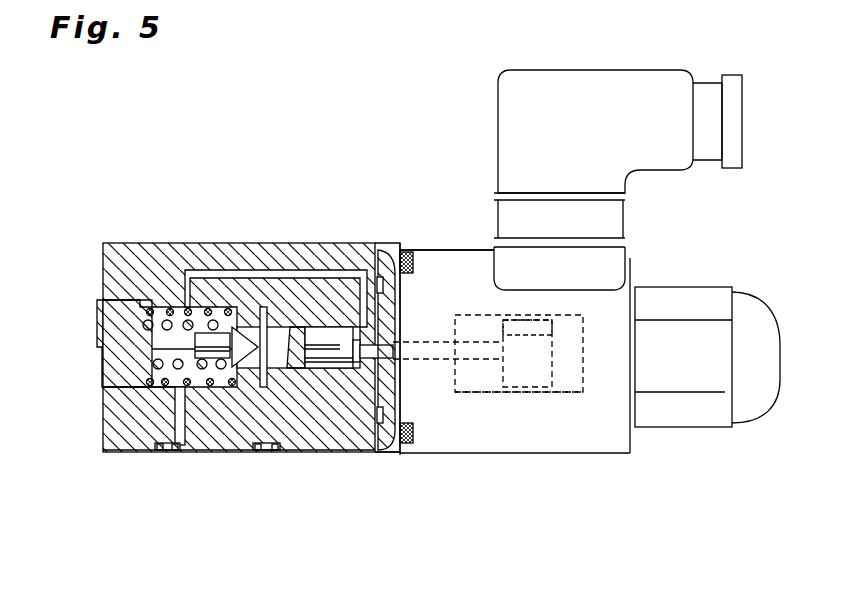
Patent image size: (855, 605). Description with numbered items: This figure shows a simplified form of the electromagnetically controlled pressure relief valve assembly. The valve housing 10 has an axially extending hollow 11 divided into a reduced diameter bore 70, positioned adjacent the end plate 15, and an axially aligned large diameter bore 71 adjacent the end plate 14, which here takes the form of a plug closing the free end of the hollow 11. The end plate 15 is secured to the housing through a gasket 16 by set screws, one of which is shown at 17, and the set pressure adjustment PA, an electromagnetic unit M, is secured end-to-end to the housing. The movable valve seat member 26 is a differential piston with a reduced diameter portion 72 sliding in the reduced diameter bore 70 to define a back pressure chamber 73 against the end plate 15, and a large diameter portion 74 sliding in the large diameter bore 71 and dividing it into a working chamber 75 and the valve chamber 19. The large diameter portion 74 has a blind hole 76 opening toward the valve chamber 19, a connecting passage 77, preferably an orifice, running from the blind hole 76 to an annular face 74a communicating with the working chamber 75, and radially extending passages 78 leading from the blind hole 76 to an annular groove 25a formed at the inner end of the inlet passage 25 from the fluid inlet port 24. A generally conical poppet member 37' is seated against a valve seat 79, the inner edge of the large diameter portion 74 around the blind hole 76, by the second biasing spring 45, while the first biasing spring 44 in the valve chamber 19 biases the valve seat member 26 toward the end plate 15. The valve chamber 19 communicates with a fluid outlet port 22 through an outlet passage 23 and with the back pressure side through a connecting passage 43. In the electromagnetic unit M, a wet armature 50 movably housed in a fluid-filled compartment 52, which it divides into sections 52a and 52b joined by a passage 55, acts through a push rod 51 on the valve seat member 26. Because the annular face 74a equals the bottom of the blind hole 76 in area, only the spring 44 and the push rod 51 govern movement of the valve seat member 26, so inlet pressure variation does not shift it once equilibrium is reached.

The valve housing 10 is at (102, 242).
The axially extending hollow 11 is at (165, 412).
The flanged end plate 14 is at (113, 330).
The flanged end plate 15 is at (410, 453).
The gasket 16 is at (393, 243).
The set screw 17 is at (443, 453).
The valve chamber 19 is at (150, 303).
The fluid outlet port 22 is at (145, 452).
The outlet passage 23 is at (168, 422).
The fluid inlet port 24 is at (277, 453).
The inlet passage 25 is at (262, 453).
The annular groove 25a is at (262, 335).
The movable valve seat member 26 is at (307, 453).
The poppet member 37' is at (137, 363).
The connecting passage 43 is at (303, 318).
The first biasing spring 44 is at (168, 322).
The second biasing spring 45 is at (190, 318).
The wet armature 50 is at (542, 378).
The push rod 51 is at (420, 290).
The compartment 52 is at (585, 330).
The compartment section 52a is at (488, 380).
The compartment section 52b is at (570, 373).
The passage 55 is at (545, 325).
The reduced diameter bore 70 is at (388, 453).
The large diameter bore 71 is at (183, 453).
The reduced diameter portion 72 is at (372, 453).
The back pressure chamber 73 is at (392, 358).
The large diameter portion 74 is at (222, 325).
The annular face 74a is at (330, 453).
The working chamber 75 is at (372, 340).
The blind hole 76 is at (300, 328).
The connecting passage 77 is at (376, 283).
The radially extending passage 78 is at (243, 453).
The valve seat 79 is at (215, 453).
The electromagnetic unit M is at (611, 452).
The set pressure adjustment PA is at (688, 251).